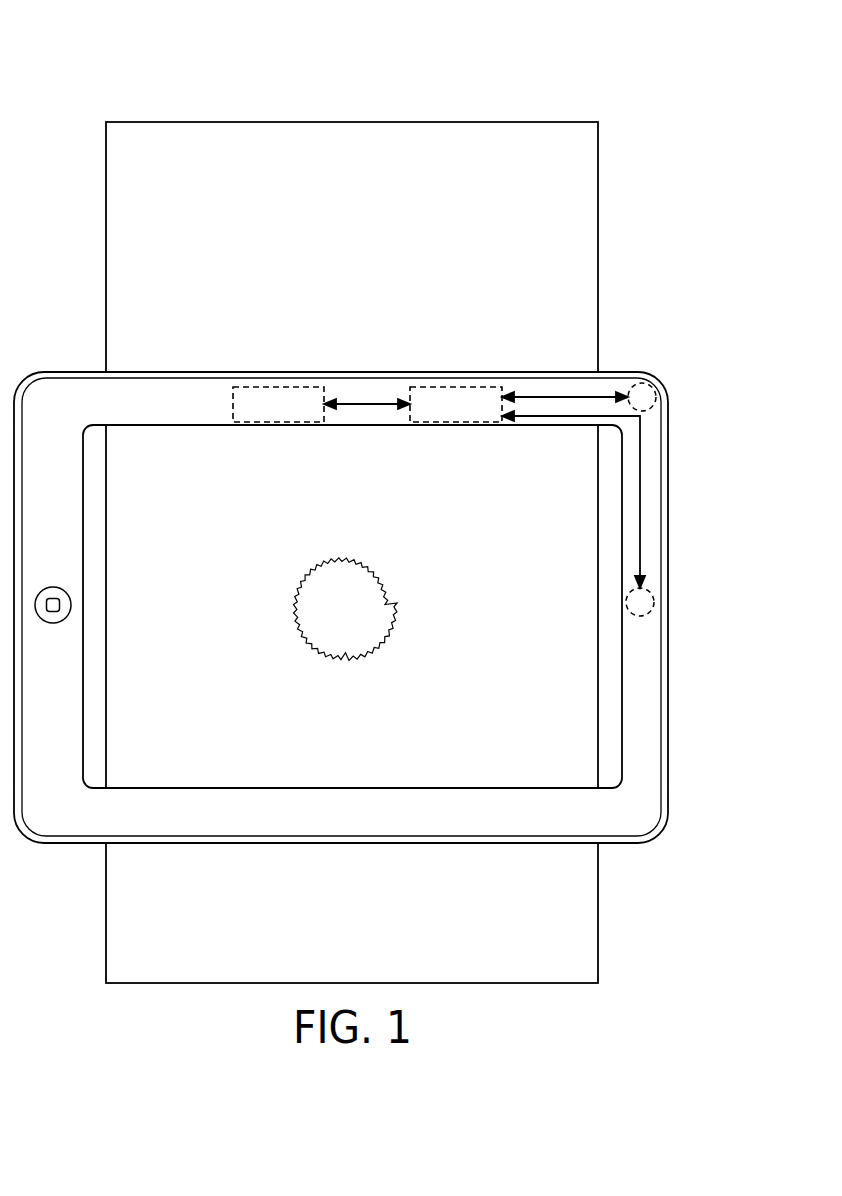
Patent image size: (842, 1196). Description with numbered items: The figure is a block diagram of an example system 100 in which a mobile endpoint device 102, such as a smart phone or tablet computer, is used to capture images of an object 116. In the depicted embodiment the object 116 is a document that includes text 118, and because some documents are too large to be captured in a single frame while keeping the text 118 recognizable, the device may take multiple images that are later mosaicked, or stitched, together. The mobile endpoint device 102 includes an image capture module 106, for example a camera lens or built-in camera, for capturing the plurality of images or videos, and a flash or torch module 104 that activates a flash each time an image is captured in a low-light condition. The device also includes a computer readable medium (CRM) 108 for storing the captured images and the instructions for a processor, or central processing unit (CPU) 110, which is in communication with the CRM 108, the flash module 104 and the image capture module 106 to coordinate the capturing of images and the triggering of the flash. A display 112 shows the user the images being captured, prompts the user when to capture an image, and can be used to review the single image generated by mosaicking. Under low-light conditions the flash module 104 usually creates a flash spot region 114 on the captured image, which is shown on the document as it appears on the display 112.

The system 100 is at (371, 495).
The mobile endpoint device 102 is at (668, 450).
The flash or torch module 104 is at (642, 399).
The image capture module 106 is at (637, 602).
The computer readable medium 108 is at (233, 405).
The processor 110 is at (457, 387).
The display 112 is at (587, 700).
The flash spot region 114 is at (322, 560).
The object 116 is at (377, 539).
The text 118 is at (457, 187).